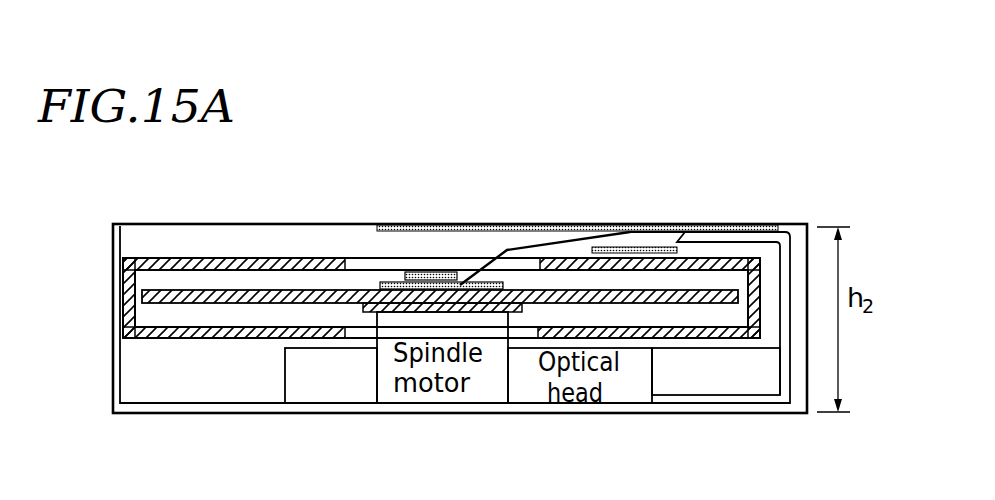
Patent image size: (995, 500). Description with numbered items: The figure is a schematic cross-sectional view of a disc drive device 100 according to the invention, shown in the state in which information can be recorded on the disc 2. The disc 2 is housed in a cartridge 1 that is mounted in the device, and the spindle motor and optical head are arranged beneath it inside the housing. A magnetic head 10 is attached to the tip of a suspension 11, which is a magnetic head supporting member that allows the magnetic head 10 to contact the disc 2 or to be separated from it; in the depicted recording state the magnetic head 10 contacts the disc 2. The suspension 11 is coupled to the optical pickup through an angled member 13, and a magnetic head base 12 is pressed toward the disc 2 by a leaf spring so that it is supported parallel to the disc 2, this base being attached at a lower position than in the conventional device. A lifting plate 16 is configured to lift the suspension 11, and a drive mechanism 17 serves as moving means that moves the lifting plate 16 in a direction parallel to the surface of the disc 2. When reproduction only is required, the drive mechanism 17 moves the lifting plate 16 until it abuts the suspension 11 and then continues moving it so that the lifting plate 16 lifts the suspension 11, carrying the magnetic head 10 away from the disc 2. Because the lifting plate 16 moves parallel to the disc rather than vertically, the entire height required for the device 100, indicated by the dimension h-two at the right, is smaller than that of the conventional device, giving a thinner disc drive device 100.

The cartridge 1 is at (183, 258).
The disc 2 is at (693, 290).
The magnetic head 10 is at (437, 272).
The suspension 11 is at (537, 244).
The magnetic head base 12 is at (405, 224).
The angled member 13 is at (760, 224).
The lifting plate 16 is at (643, 247).
The drive mechanism 17 is at (714, 378).
The disc drive device 100 is at (749, 88).